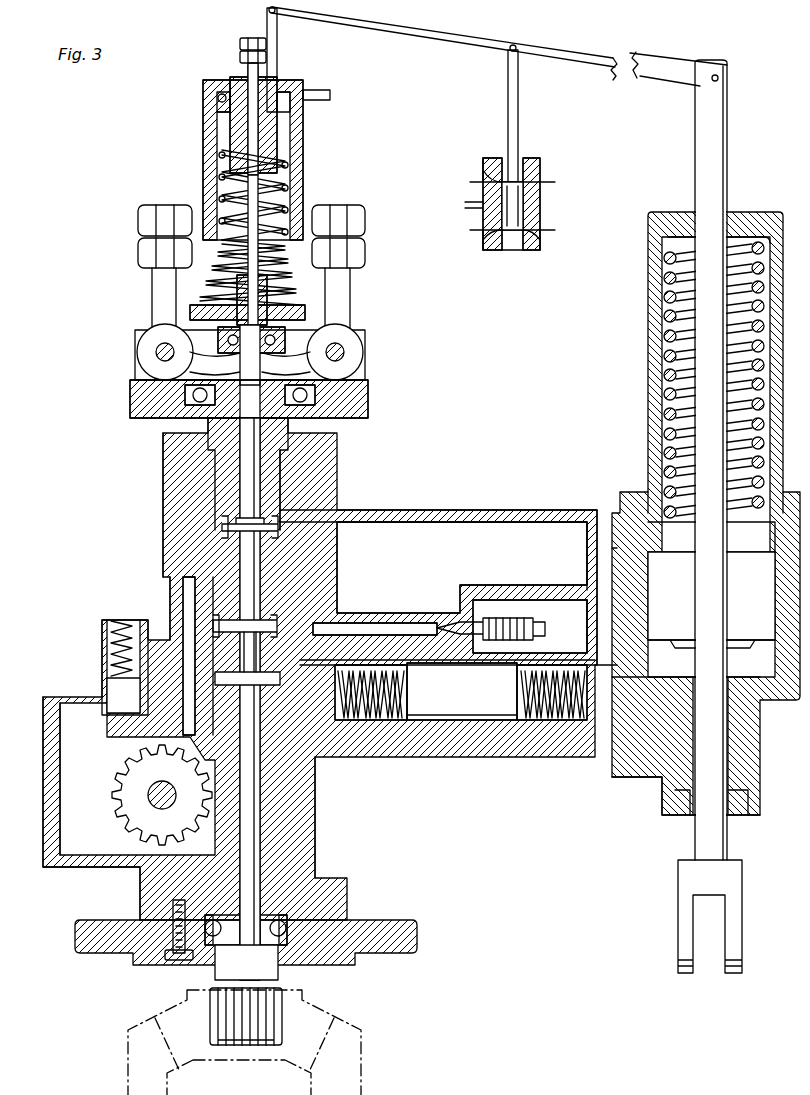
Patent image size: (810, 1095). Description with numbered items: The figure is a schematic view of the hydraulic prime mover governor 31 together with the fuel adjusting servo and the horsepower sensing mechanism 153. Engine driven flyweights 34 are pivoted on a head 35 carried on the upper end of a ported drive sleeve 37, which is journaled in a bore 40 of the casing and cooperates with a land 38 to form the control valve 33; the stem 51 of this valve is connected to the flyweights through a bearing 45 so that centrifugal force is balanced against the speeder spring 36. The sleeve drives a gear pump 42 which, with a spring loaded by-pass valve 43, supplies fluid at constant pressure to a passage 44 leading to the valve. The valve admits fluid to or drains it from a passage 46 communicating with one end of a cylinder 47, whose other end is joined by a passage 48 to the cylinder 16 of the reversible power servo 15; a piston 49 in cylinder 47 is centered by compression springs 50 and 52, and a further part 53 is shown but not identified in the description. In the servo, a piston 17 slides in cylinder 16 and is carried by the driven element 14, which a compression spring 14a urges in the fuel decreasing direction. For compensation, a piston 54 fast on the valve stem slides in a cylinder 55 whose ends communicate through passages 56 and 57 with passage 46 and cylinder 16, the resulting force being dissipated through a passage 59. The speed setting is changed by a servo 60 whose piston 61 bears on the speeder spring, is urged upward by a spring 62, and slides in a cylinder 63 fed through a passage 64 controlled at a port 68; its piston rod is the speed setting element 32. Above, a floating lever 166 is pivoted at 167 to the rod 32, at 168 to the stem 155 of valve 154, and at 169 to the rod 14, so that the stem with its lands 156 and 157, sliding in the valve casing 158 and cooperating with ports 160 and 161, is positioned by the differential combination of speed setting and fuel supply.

The driven element 14 is at (697, 837).
The compression spring 14a is at (664, 388).
The reversible power servo 15 is at (653, 813).
The cylinder 16 is at (775, 695).
The piston 17 is at (752, 636).
The governor 31 is at (381, 304).
The speed setting element 32 is at (270, 68).
The control valve 33 is at (276, 616).
The flyweights 34 is at (138, 250).
The head 35 is at (368, 396).
The speeder spring 36 is at (280, 283).
The ported drive sleeve 37 is at (215, 480).
The land 38 is at (250, 635).
The bore 40 is at (280, 482).
The gear pump 42 is at (198, 847).
The spring loaded by-pass valve 43 is at (99, 686).
The passage 44 is at (183, 612).
The bearing 45 is at (278, 340).
The passage 46 is at (290, 690).
The cylinder 47 is at (380, 722).
The passage 48 is at (588, 660).
The piston 49 is at (475, 720).
The compression spring 50 is at (355, 720).
The valve stem 51 is at (262, 372).
The compression spring 52 is at (555, 720).
The collar 53 is at (232, 632).
The piston 54 is at (222, 523).
The cylinder 55 is at (238, 518).
The passage 56 is at (323, 568).
The passage 57 is at (458, 510).
The passage 59 is at (403, 623).
The servo 60 is at (203, 113).
The piston 61 is at (230, 128).
The spring 62 is at (290, 160).
The cylinder 63 is at (215, 96).
The passage 64 is at (318, 92).
The port 68 is at (451, 613).
The mechanism 153 is at (548, 22).
The valve 154 is at (537, 152).
The stem 155 is at (518, 98).
The land 156 is at (496, 178).
The land 157 is at (495, 232).
The valve casing 158 is at (515, 252).
The port 160 is at (530, 193).
The port 161 is at (540, 236).
The floating lever 166 is at (625, 78).
The pivotal connection 167 is at (268, 12).
The pivotal connection 168 is at (510, 50).
The pivotal connection 169 is at (719, 79).